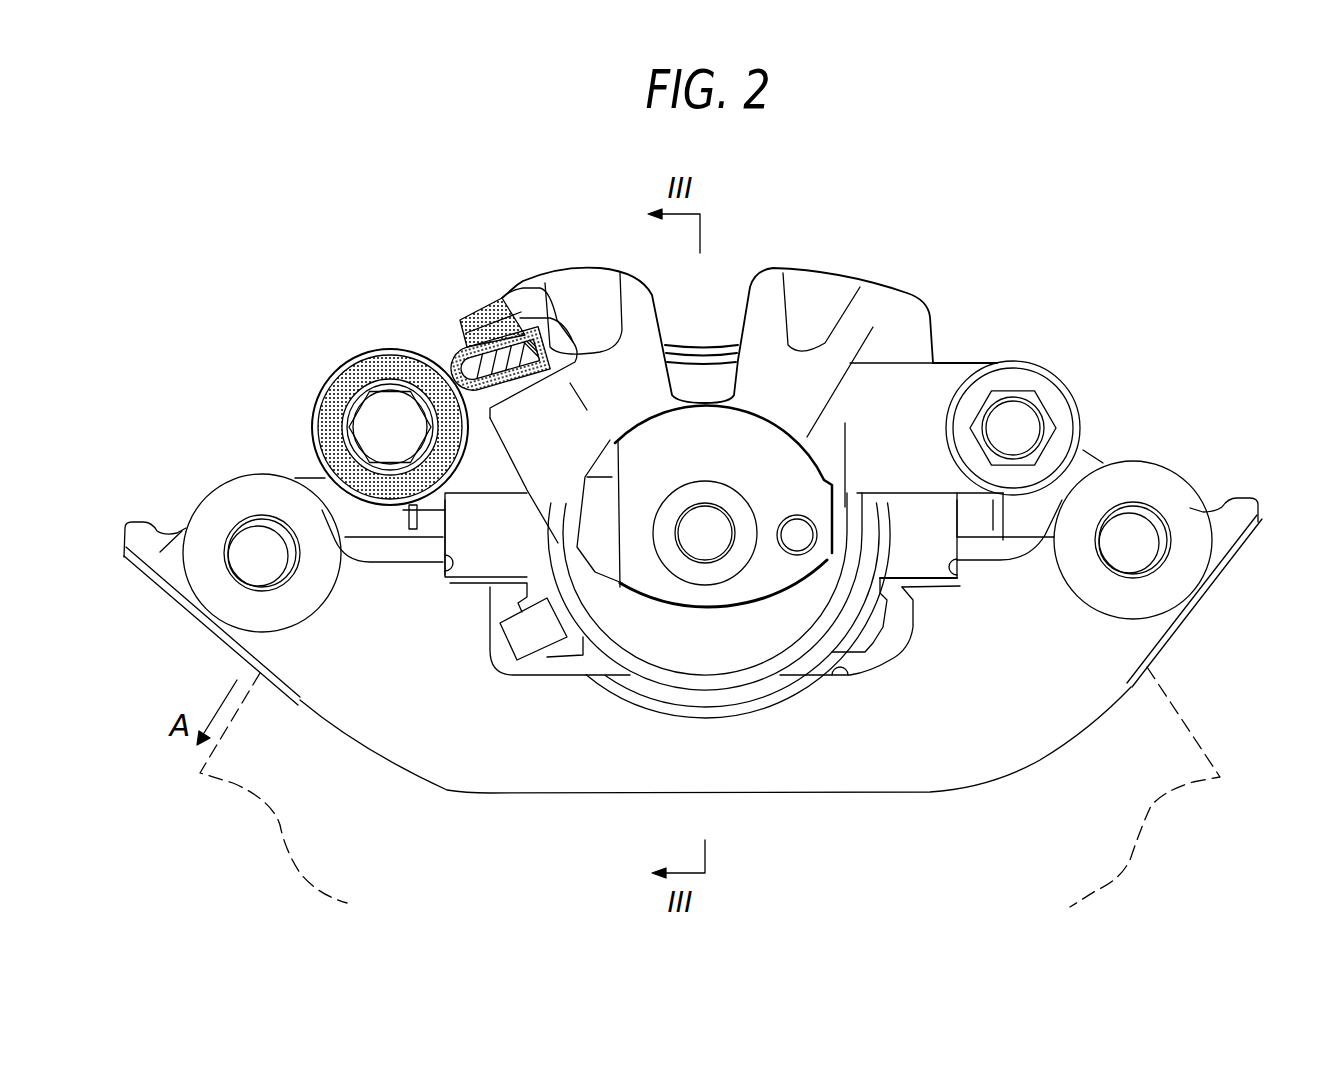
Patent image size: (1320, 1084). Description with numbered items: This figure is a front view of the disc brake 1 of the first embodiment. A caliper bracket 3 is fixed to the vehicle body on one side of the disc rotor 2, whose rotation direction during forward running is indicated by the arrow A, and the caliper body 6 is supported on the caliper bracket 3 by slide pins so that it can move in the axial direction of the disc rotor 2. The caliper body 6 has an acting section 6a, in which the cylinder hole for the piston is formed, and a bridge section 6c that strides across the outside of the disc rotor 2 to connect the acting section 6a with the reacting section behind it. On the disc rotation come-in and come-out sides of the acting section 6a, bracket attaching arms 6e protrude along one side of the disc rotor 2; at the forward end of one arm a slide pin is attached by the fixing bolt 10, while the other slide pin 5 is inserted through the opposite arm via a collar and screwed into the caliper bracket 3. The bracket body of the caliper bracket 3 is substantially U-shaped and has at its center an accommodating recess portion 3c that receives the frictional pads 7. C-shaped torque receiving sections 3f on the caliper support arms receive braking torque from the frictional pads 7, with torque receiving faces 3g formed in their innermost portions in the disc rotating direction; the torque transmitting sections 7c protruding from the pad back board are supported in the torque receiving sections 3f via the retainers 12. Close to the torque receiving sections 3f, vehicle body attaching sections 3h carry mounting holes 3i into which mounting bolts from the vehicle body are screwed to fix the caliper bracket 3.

The disc brake 1 is at (937, 208).
The disc rotor 2 is at (1240, 705).
The caliper bracket 3 is at (852, 800).
The accommodating recess portion 3c is at (836, 676).
The torque receiving section 3f is at (455, 532).
The torque receiving face 3g is at (437, 580).
The vehicle body attaching section 3h is at (270, 646).
The mounting hole 3i is at (262, 520).
The slide pin 5 is at (388, 407).
The caliper body 6 is at (827, 267).
The acting section 6a is at (738, 647).
The bridge section 6c is at (582, 288).
The bracket attaching arm 6e is at (493, 457).
The frictional pad 7 is at (568, 660).
The torque transmitting section 7c is at (406, 517).
The fixing bolt 10 is at (1030, 415).
The retainer 12 is at (490, 598).